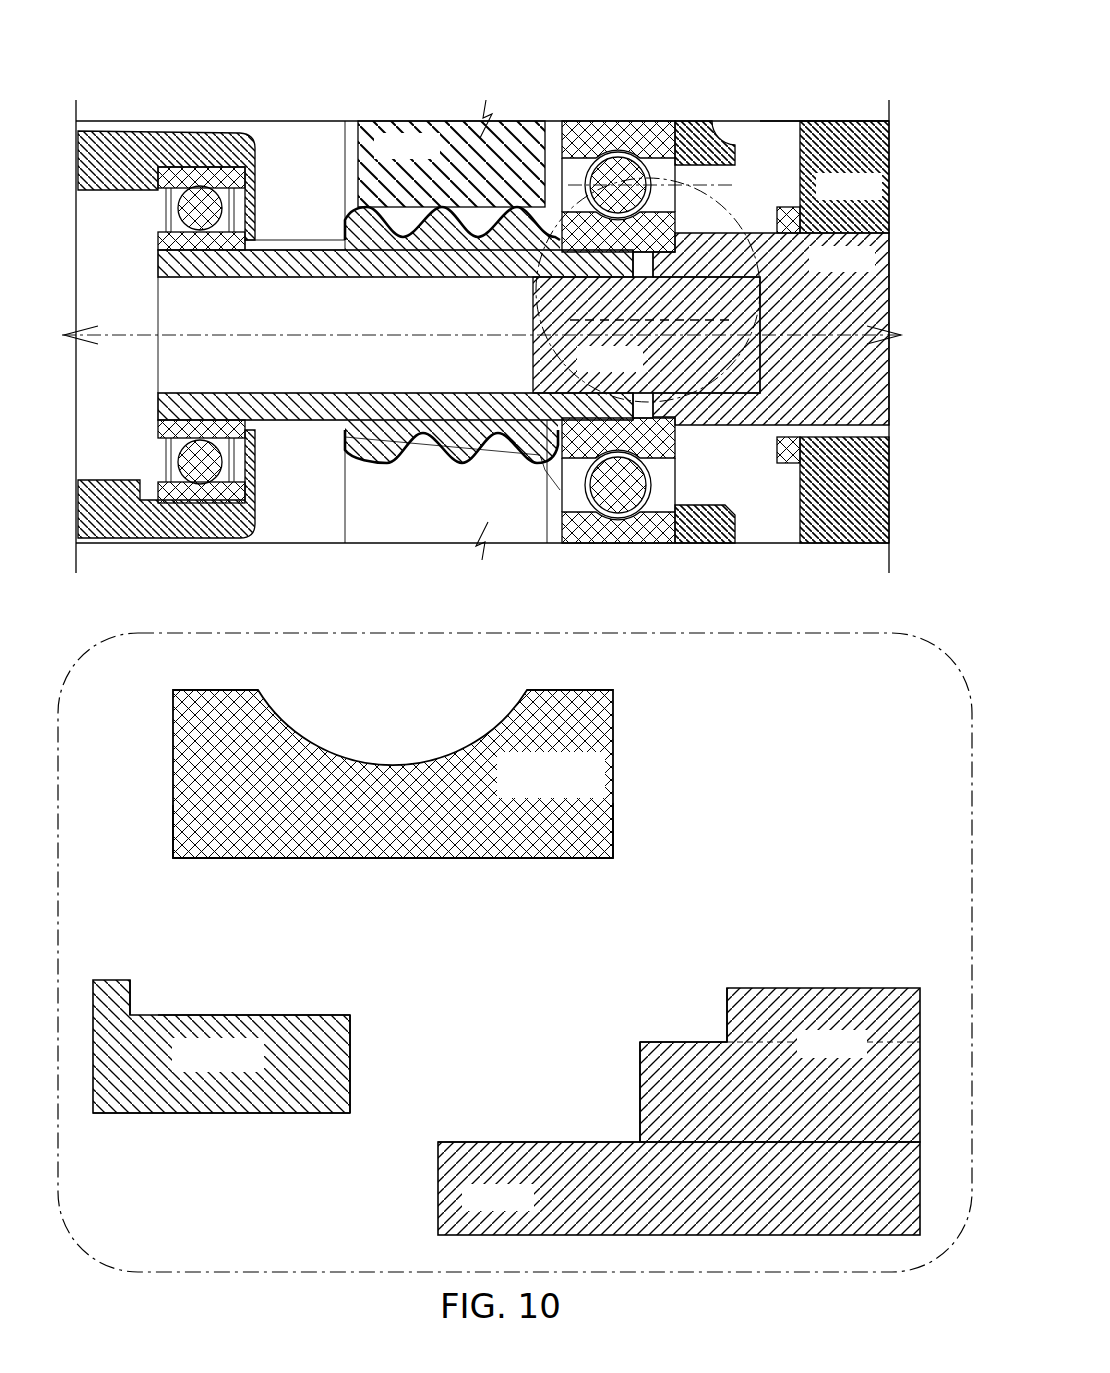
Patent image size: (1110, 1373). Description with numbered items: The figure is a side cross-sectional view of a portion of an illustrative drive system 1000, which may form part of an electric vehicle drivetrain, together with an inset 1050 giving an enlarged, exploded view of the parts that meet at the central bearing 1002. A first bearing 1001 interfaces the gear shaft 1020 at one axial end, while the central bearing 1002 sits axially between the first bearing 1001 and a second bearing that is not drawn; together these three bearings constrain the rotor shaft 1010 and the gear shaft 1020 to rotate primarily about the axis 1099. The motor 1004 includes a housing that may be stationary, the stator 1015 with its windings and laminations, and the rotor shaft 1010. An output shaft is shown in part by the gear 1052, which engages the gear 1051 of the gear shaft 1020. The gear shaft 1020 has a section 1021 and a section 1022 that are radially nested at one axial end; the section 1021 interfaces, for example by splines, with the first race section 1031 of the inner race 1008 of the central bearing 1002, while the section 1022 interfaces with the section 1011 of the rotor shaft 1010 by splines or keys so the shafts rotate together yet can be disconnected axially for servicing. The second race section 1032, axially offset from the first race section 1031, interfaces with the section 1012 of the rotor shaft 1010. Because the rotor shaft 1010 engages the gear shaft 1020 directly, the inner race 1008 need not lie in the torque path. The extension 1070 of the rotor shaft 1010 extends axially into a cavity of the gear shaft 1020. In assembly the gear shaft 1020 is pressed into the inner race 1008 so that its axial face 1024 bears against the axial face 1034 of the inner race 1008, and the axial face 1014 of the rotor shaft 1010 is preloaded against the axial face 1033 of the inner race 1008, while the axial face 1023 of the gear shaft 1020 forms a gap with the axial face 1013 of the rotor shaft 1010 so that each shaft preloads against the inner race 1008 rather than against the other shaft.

The drive system 1000 is at (511, 54).
The first bearing 1001 is at (197, 187).
The central bearing 1002 is at (622, 122).
The motor 1004 is at (850, 108).
The inner race 1008 is at (675, 150).
The rotor shaft 1010 is at (868, 269).
The section of rotor shaft 1011 is at (620, 1128).
The section of rotor shaft 1012 is at (720, 1036).
The axial face of rotor shaft 1013 is at (640, 1122).
The axial face of rotor shaft 1014 is at (727, 1042).
The stator 1015 is at (875, 197).
The gear shaft 1020 is at (395, 282).
The section of gear shaft 1021 is at (158, 1002).
The section of gear shaft 1022 is at (350, 1125).
The axial face of gear shaft 1023 is at (362, 1090).
The axial face of gear shaft 1024 is at (143, 1008).
The first race section 1031 is at (455, 870).
The second race section 1032 is at (605, 868).
The axial face of inner race 1033 is at (625, 858).
The axial face of inner race 1034 is at (165, 805).
The inset 1050 is at (758, 240).
The gear 1051 is at (483, 463).
The gear 1052 is at (433, 156).
The extension 1070 is at (636, 369).
The axis 1099 is at (131, 335).